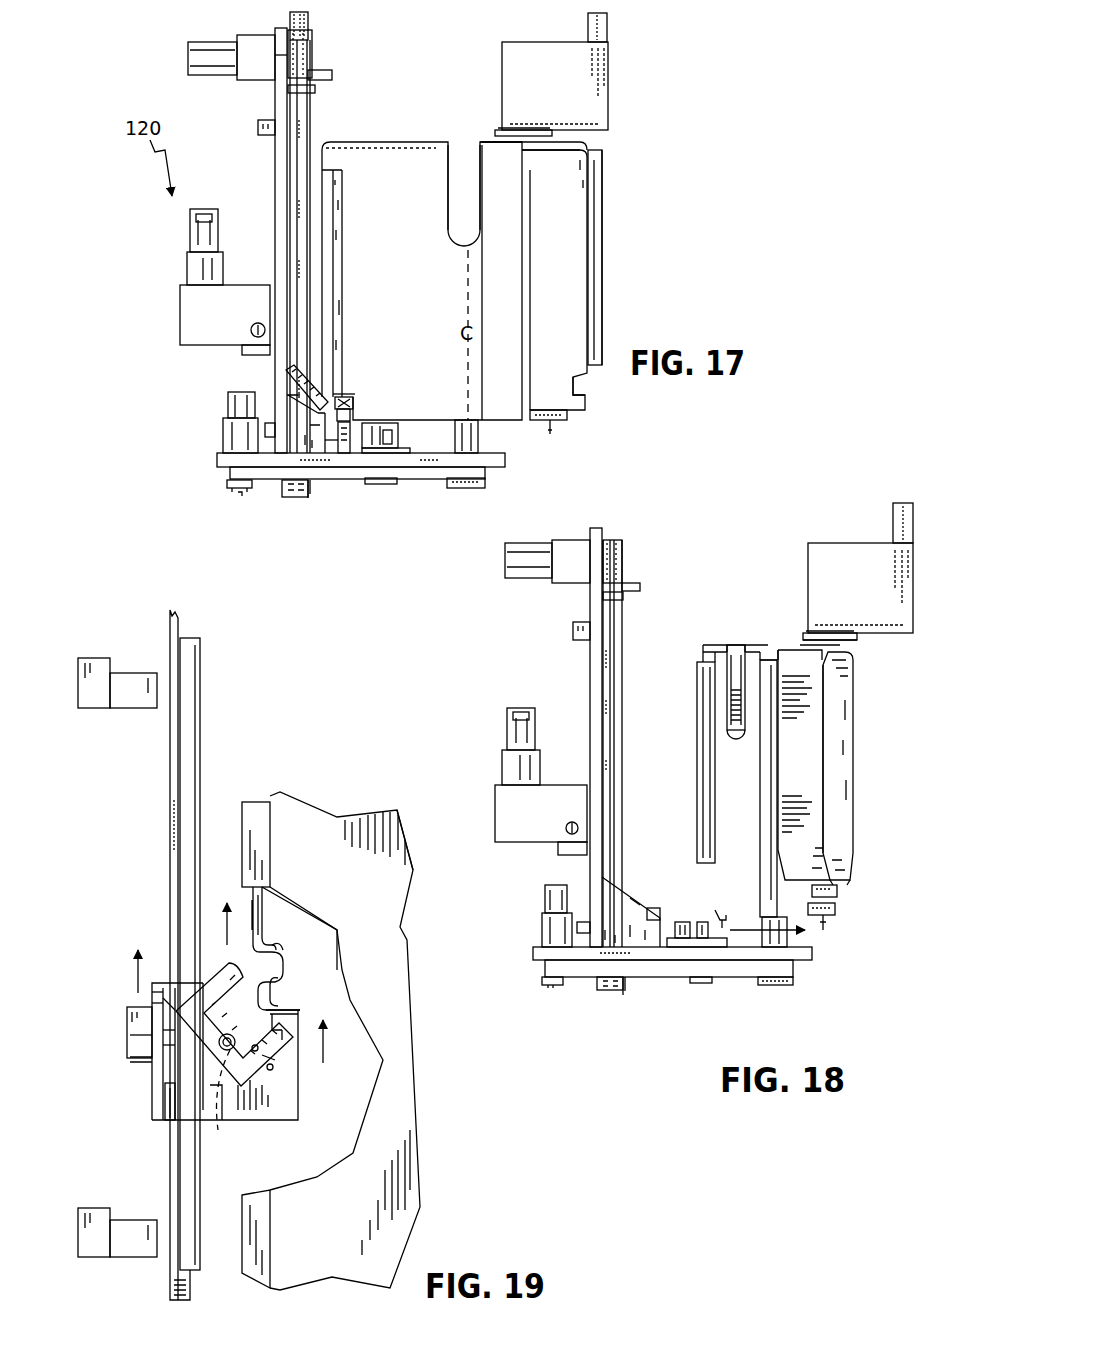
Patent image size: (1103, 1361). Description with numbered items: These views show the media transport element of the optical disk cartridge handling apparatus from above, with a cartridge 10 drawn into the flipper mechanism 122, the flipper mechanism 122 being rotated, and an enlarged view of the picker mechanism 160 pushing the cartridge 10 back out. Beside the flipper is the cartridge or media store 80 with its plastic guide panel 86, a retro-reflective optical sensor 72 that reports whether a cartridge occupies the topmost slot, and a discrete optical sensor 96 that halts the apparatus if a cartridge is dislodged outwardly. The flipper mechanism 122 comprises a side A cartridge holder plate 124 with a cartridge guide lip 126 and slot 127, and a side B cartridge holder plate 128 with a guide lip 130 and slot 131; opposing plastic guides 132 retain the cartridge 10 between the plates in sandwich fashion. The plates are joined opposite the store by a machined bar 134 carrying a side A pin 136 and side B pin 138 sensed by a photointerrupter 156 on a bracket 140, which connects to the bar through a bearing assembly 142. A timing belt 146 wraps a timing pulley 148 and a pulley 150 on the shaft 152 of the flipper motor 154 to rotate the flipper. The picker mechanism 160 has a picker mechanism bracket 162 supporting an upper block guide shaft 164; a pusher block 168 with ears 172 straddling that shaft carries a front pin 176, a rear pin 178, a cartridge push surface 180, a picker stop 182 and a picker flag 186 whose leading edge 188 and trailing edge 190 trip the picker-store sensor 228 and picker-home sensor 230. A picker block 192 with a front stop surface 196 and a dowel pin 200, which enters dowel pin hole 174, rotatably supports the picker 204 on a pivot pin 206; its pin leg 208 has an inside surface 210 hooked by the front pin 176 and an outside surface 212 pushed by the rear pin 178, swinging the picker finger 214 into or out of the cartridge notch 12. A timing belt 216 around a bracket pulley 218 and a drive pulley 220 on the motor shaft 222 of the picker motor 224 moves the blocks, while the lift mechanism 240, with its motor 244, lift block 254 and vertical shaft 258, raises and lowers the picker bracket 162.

In FIG. 17, the optical disk cartridge 10 is at (554, 280).
In FIG. 18, the optical disk cartridge 10 is at (810, 770).
In FIG. 19, the optical disk cartridge 10 is at (262, 905).
In FIG. 17, the pick notch 12 is at (585, 380).
In FIG. 18, the pick notch 12 is at (840, 890).
In FIG. 19, the pick notch 12 is at (283, 950).
In FIG. 17, the retro-reflective optical sensor 72 is at (330, 75).
In FIG. 18, the retro-reflective optical sensor 72 is at (632, 583).
In FIG. 17, the cartridge or media store 80 is at (612, 15).
In FIG. 18, the cartridge or media store 80 is at (912, 505).
In FIG. 17, the plastic guide panel 86 is at (588, 18).
In FIG. 18, the plastic guide panel 86 is at (893, 525).
In FIG. 17, the discrete optical sensor 96 is at (496, 132).
In FIG. 18, the discrete optical sensor 96 is at (805, 634).
In FIG. 17, the flipper mechanism 122 is at (605, 232).
In FIG. 18, the flipper mechanism 122 is at (708, 640).
In FIG. 19, the flipper mechanism 122 is at (375, 800).
In FIG. 17, the side "A" cartridge holder plate 124 is at (426, 281).
In FIG. 18, the side "A" cartridge holder plate 124 is at (838, 893).
In FIG. 19, the side "A" cartridge holder plate 124 is at (345, 1041).
In FIG. 17, the cartridge guide lip 126 is at (497, 150).
In FIG. 18, the cartridge guide lip 126 is at (835, 645).
In FIG. 17, the slot 127 is at (462, 165).
In FIG. 18, the slot 127 is at (775, 648).
In FIG. 17, the side "B" cartridge holder plate 128 is at (596, 280).
In FIG. 18, the side "B" cartridge holder plate 128 is at (712, 805).
In FIG. 17, the cartridge guide lip 130 is at (562, 147).
In FIG. 18, the cartridge guide lip 130 is at (750, 648).
In FIG. 18, the slot 131 is at (738, 735).
In FIG. 17, the plastic guides 132 is at (333, 273).
In FIG. 18, the plastic guides 132 is at (698, 730).
In FIG. 19, the plastic guides 132 is at (248, 802).
In FIG. 17, the machined bar 134 is at (568, 418).
In FIG. 18, the machined bar 134 is at (836, 910).
In FIG. 17, the side "A" pin or flag 136 is at (388, 430).
In FIG. 18, the side "A" pin or flag 136 is at (826, 928).
In FIG. 17, the side "B" flag or pin 138 is at (552, 435).
In FIG. 18, the side "B" flag or pin 138 is at (728, 908).
In FIG. 17, the bracket 140 is at (470, 458).
In FIG. 18, the bracket 140 is at (535, 955).
In FIG. 17, the bearing assembly 142 is at (472, 428).
In FIG. 18, the bearing assembly 142 is at (790, 938).
In FIG. 17, the timing belt 146 is at (385, 480).
In FIG. 18, the timing belt 146 is at (790, 985).
In FIG. 17, the timing pulley 148 is at (465, 488).
In FIG. 18, the timing pulley 148 is at (770, 985).
In FIG. 17, the pulley 150 is at (242, 492).
In FIG. 18, the pulley 150 is at (558, 988).
In FIG. 17, the shaft 152 is at (230, 470).
In FIG. 18, the shaft 152 is at (545, 977).
In FIG. 17, the flipper motor 154 is at (232, 438).
In FIG. 18, the flipper motor 154 is at (548, 930).
In FIG. 17, the photointerrupter 156 is at (400, 440).
In FIG. 18, the photointerrupter 156 is at (720, 950).
In FIG. 17, the picker mechanism 160 is at (343, 432).
In FIG. 18, the picker mechanism 160 is at (665, 900).
In FIG. 19, the picker mechanism 160 is at (250, 1125).
In FIG. 17, the picker mechanism bracket 162 is at (281, 215).
In FIG. 18, the picker mechanism bracket 162 is at (596, 690).
In FIG. 17, the upper block guide shaft 164 is at (302, 173).
In FIG. 18, the upper block guide shaft 164 is at (616, 680).
In FIG. 19, the upper block guide shaft 164 is at (198, 1240).
In FIG. 17, the pusher block 168 is at (350, 438).
In FIG. 19, the pusher block 168 is at (280, 1110).
In FIG. 19, the ears 172 is at (178, 1122).
In FIG. 19, the dowel pin hole 174 is at (223, 1100).
In FIG. 19, the front pin or puller 176 is at (282, 995).
In FIG. 19, the rear pin or pusher 178 is at (272, 1072).
In FIG. 17, the cartridge push surface or projection 180 is at (348, 398).
In FIG. 18, the cartridge push surface or projection 180 is at (650, 908).
In FIG. 19, the cartridge push surface or projection 180 is at (288, 1005).
In FIG. 19, the lower picker stop or bar 182 is at (158, 990).
In FIG. 19, the picker flag 186 is at (127, 1030).
In FIG. 19, the leading or forward edge 188 is at (138, 1005).
In FIG. 19, the trailing edge 190 is at (178, 1040).
In FIG. 19, the picker block 192 is at (172, 1022).
In FIG. 19, the front stop surface 196 is at (172, 1000).
In FIG. 19, the dowel pin 200 is at (200, 1040).
In FIG. 17, the picker 204 is at (295, 400).
In FIG. 18, the picker 204 is at (635, 900).
In FIG. 19, the picker 204 is at (208, 1025).
In FIG. 19, the pivot pin 206 is at (229, 1033).
In FIG. 17, the pin leg 208 is at (338, 440).
In FIG. 19, the pin leg 208 is at (296, 1014).
In FIG. 17, the inside surface 210 is at (344, 394).
In FIG. 19, the inside surface 210 is at (292, 1010).
In FIG. 17, the outside surface 212 is at (350, 418).
In FIG. 19, the outside surface 212 is at (280, 1060).
In FIG. 17, the picker finger 214 is at (288, 372).
In FIG. 19, the picker finger 214 is at (232, 1000).
In FIG. 17, the timing belt 216 is at (300, 14).
In FIG. 18, the timing belt 216 is at (612, 990).
In FIG. 19, the timing belt 216 is at (175, 770).
In FIG. 17, the bracket pulley 218 is at (309, 498).
In FIG. 18, the bracket pulley 218 is at (625, 992).
In FIG. 17, the drive pulley 220 is at (312, 50).
In FIG. 18, the drive pulley 220 is at (622, 552).
In FIG. 17, the motor shaft 222 is at (272, 58).
In FIG. 17, the picker motor 224 is at (215, 63).
In FIG. 18, the picker motor 224 is at (528, 550).
In FIG. 17, the picker-store photointerrupter or optical sensor 228 is at (258, 128).
In FIG. 18, the picker-store photointerrupter or optical sensor 228 is at (577, 632).
In FIG. 19, the picker-store photointerrupter or optical sensor 228 is at (137, 705).
In FIG. 17, the picker-home photointerrupter or optical sensor 230 is at (265, 430).
In FIG. 18, the picker-home photointerrupter or optical sensor 230 is at (578, 927).
In FIG. 19, the picker-home photointerrupter or optical sensor 230 is at (130, 1250).
In FIG. 17, the lift or locating mechanism 240 is at (188, 300).
In FIG. 18, the lift or locating mechanism 240 is at (502, 810).
In FIG. 17, the motor 244 is at (195, 268).
In FIG. 18, the motor 244 is at (510, 762).
In FIG. 17, the lift block or bracket 254 is at (244, 350).
In FIG. 18, the lift block or bracket 254 is at (560, 855).
In FIG. 17, the vertical shaft 258 is at (252, 326).
In FIG. 18, the vertical shaft 258 is at (566, 826).